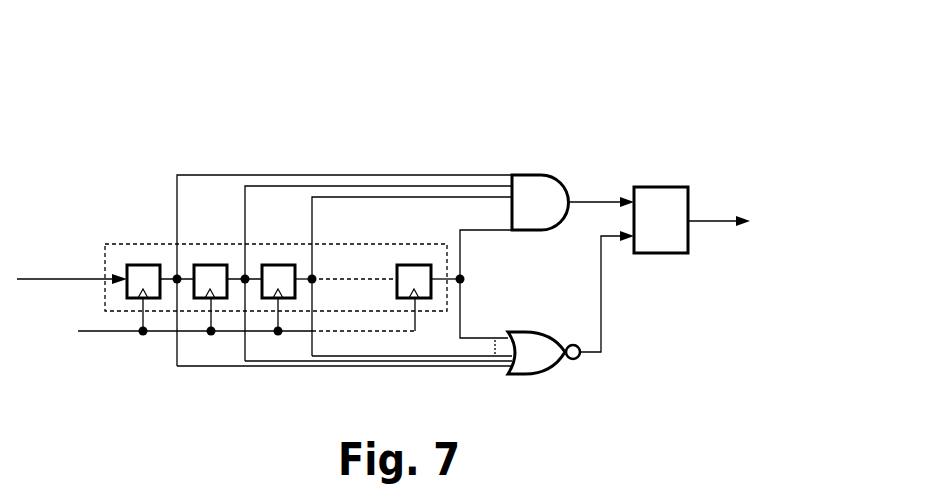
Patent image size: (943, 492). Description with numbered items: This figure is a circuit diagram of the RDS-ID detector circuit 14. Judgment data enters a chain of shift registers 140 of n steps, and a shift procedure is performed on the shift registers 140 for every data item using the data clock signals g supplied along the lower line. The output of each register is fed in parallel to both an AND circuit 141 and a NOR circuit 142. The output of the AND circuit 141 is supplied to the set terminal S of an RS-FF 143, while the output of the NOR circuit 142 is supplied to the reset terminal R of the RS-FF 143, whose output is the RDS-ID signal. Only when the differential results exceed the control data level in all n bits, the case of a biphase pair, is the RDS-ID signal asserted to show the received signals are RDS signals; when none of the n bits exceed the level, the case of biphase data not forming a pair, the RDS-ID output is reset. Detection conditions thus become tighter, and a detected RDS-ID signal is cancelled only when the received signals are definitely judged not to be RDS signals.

The RDS-ID detector circuit 14 is at (413, 96).
The shift registers 140 is at (128, 240).
The AND circuit 141 is at (538, 175).
The NOR circuit 142 is at (557, 368).
The RS-FF 143 is at (668, 186).